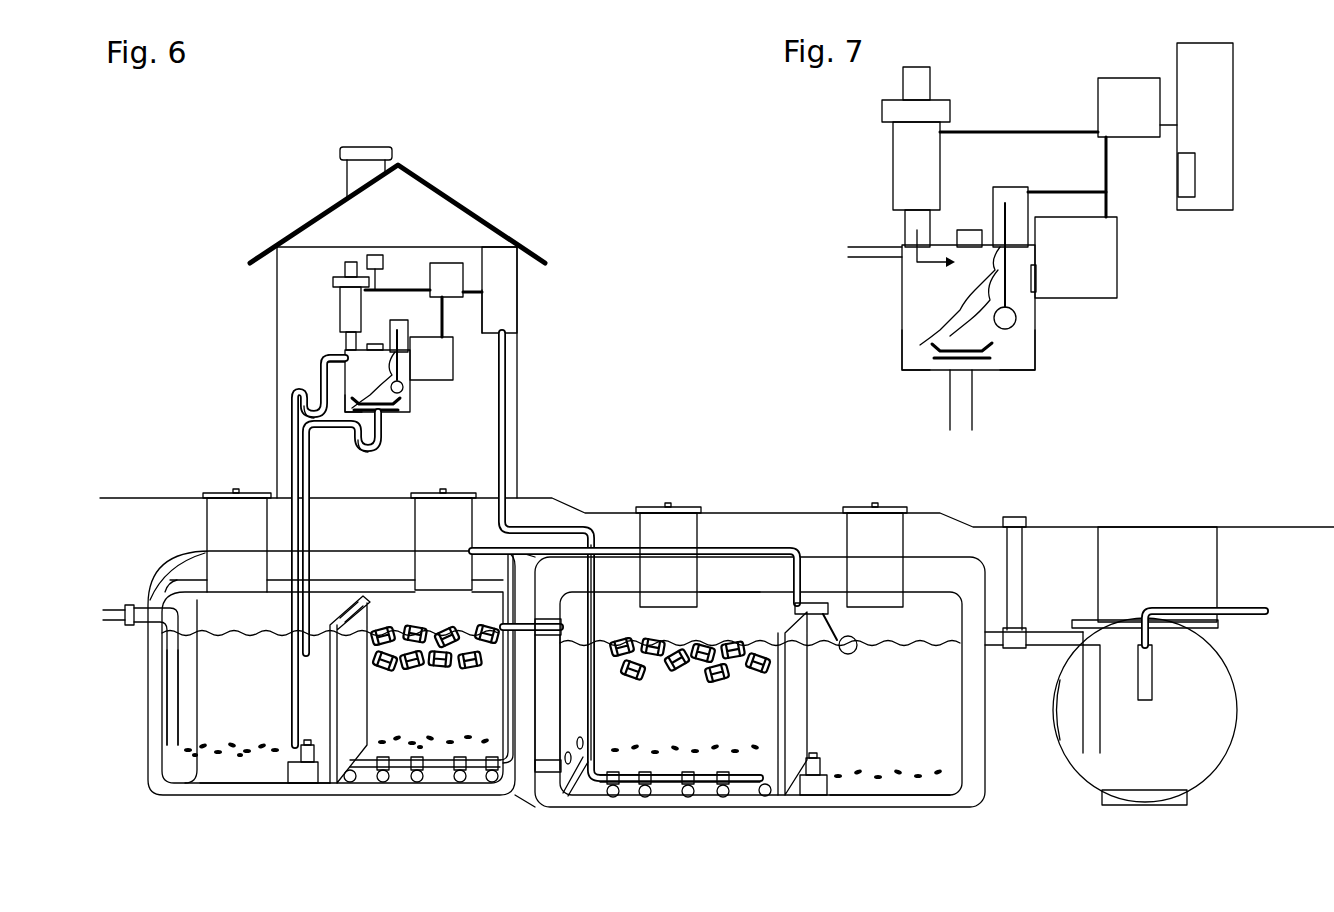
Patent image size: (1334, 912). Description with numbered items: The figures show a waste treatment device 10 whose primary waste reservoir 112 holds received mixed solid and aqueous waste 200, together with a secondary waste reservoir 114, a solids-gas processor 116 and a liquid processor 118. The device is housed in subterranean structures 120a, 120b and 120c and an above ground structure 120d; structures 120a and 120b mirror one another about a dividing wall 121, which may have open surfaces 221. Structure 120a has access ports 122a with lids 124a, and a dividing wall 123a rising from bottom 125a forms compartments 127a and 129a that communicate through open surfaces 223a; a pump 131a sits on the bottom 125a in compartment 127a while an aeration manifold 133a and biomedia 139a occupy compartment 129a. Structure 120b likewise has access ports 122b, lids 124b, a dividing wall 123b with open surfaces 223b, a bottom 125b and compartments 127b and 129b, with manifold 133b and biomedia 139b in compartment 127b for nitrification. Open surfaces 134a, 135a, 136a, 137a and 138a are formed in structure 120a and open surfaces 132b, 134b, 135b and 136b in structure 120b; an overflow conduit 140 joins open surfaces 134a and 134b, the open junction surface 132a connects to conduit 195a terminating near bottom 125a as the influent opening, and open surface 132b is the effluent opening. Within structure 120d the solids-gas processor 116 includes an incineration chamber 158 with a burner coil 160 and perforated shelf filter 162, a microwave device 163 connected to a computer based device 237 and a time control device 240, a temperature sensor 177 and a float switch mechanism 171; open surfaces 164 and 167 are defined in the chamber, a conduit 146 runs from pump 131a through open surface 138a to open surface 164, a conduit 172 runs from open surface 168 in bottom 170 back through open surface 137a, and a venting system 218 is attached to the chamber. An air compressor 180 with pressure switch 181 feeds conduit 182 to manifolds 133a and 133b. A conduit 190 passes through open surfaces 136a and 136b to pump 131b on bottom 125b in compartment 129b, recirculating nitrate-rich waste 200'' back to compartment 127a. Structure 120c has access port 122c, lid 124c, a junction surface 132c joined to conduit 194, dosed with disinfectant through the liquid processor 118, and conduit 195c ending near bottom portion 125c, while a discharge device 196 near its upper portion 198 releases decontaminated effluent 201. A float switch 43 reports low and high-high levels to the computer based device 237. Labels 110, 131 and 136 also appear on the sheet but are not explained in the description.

In FIG. 6, the waste treatment device 10 is at (315, 137).
In FIG. 6, the treatment plant 110 is at (548, 462).
In FIG. 6, the primary waste reservoir 112 is at (200, 806).
In FIG. 6, the secondary waste reservoir 114 is at (957, 808).
In FIG. 6, the solids-gas processor 116 is at (424, 288).
In FIG. 6, the liquid processor 118 is at (1016, 517).
In FIG. 6, the subterranean structure 120a is at (186, 750).
In FIG. 6, the subterranean structure 120b is at (560, 808).
In FIG. 6, the subterranean structure 120c is at (1238, 712).
In FIG. 6, the above ground structure 120d is at (291, 440).
In FIG. 6, the dividing wall 121 is at (552, 682).
In FIG. 6, the access ports 122a is at (226, 514).
In FIG. 6, the access ports 122b is at (890, 513).
In FIG. 6, the access port 122c is at (1218, 571).
In FIG. 6, the dividing wall 123a is at (340, 710).
In FIG. 6, the dividing wall 123b is at (770, 700).
In FIG. 6, the lids 124a is at (290, 458).
In FIG. 6, the lids 124b is at (699, 550).
In FIG. 6, the lid 124c is at (1160, 527).
In FIG. 6, the bottom 125a is at (262, 793).
In FIG. 6, the bottom 125b is at (900, 796).
In FIG. 6, the bottom portion 125c is at (1206, 783).
In FIG. 6, the compartment 127a is at (173, 798).
In FIG. 6, the compartment 127b is at (673, 782).
In FIG. 6, the compartment 129a is at (420, 790).
In FIG. 6, the compartment 129b is at (870, 782).
In FIG. 6, the inlet coupling 131 is at (130, 628).
In FIG. 6, the pump 131a is at (306, 784).
In FIG. 6, the pump 131b is at (812, 792).
In FIG. 6, the open junction surface 132a is at (168, 580).
In FIG. 6, the open surface 132b is at (1030, 650).
In FIG. 6, the junction surface 132c is at (1045, 650).
In FIG. 6, the aeration manifold 133a is at (510, 778).
In FIG. 6, the aeration manifold 133b is at (598, 790).
In FIG. 6, the open surface 134a is at (540, 626).
In FIG. 6, the open surface 134b is at (560, 782).
In FIG. 6, the open surface 135a is at (548, 618).
In FIG. 6, the open surface 135b is at (598, 560).
In FIG. 6, the inlet pipe 136 is at (138, 606).
In FIG. 6, the open surface 136a is at (365, 596).
In FIG. 6, the open surface 136b is at (801, 550).
In FIG. 6, the open surface 137a is at (314, 550).
In FIG. 6, the open surface 138a is at (263, 588).
In FIG. 6, the biomedia 139a is at (456, 782).
In FIG. 6, the biomedia 139b is at (706, 790).
In FIG. 6, the overflow conduit 140 is at (596, 530).
In FIG. 6, the conduit 146 is at (312, 405).
In FIG. 6, the incineration chamber 158 is at (345, 385).
In FIG. 7, the incineration chamber 158 is at (868, 257).
In FIG. 6, the burner coil 160 is at (355, 395).
In FIG. 7, the burner coil 160 is at (928, 345).
In FIG. 6, the perforated stainless steel shelf filter 162 is at (345, 405).
In FIG. 7, the perforated stainless steel shelf filter 162 is at (902, 337).
In FIG. 6, the microwave device 163 is at (453, 345).
In FIG. 7, the microwave device 163 is at (1117, 250).
In FIG. 6, the open surface 164 is at (335, 358).
In FIG. 7, the open surface 164 is at (900, 247).
In FIG. 6, the open surface 167 is at (375, 344).
In FIG. 7, the open surface 167 is at (903, 245).
In FIG. 6, the open surface 168 is at (400, 418).
In FIG. 7, the open surface 168 is at (990, 373).
In FIG. 7, the bottom 170 is at (1037, 375).
In FIG. 6, the float switch mechanism 171 is at (404, 385).
In FIG. 7, the float switch mechanism 171 is at (1016, 318).
In FIG. 6, the conduit 172 is at (303, 425).
In FIG. 7, the conduit 172 is at (947, 382).
In FIG. 6, the temperature sensor 177 is at (408, 325).
In FIG. 7, the temperature sensor 177 is at (966, 225).
In FIG. 6, the air compressor 180 is at (517, 262).
In FIG. 7, the air compressor 180 is at (1190, 68).
In FIG. 7, the pressure switch 181 is at (1190, 183).
In FIG. 6, the conduit 182 is at (502, 350).
In FIG. 6, the conduit 190 is at (741, 590).
In FIG. 6, the conduit 194 is at (1046, 590).
In FIG. 6, the conduit 195a is at (170, 750).
In FIG. 6, the conduit 195c is at (1082, 735).
In FIG. 6, the discharge device 196 is at (1150, 680).
In FIG. 6, the upper portion 198 is at (1233, 690).
In FIG. 6, the waste 200 is at (330, 668).
In FIG. 6, the waste 200'' is at (760, 673).
In FIG. 6, the decontaminated effluent 201 is at (1125, 714).
In FIG. 6, the venting system 218 is at (343, 300).
In FIG. 7, the venting system 218 is at (955, 126).
In FIG. 6, the open surfaces 221 is at (700, 560).
In FIG. 6, the open surfaces 223a is at (437, 490).
In FIG. 6, the open surfaces 223b is at (920, 508).
In FIG. 6, the computer based device 237 is at (455, 265).
In FIG. 7, the computer based device 237 is at (1105, 90).
In FIG. 6, the time control device 240 is at (367, 260).
In FIG. 6, the float switch 43 is at (842, 600).